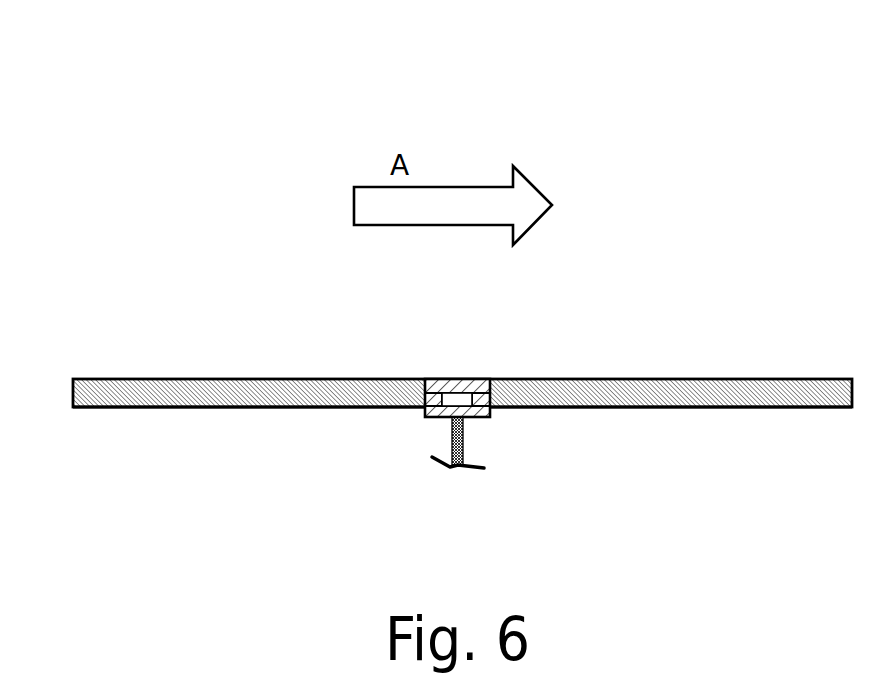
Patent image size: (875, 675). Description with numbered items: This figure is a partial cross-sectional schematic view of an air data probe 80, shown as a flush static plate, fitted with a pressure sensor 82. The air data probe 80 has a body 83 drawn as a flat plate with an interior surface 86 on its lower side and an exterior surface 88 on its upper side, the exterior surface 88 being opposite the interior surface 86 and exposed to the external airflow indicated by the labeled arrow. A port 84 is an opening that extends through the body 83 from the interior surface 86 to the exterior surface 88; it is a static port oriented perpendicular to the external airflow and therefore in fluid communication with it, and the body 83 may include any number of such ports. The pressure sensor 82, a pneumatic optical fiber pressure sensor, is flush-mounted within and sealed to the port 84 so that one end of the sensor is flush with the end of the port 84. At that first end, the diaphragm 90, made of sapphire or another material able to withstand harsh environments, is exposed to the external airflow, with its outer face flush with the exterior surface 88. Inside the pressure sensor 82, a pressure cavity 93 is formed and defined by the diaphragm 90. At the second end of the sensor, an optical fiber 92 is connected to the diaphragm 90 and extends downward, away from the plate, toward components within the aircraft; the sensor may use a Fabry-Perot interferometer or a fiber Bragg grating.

The air data probe 80 is at (126, 86).
The pressure sensor 82 is at (483, 378).
The body 83 is at (788, 291).
The port 84 is at (483, 379).
The interior surface 86 is at (188, 408).
The exterior surface 88 is at (163, 378).
The diaphragm 90 is at (453, 379).
The optical fiber 92 is at (463, 440).
The cavity 93 is at (449, 398).